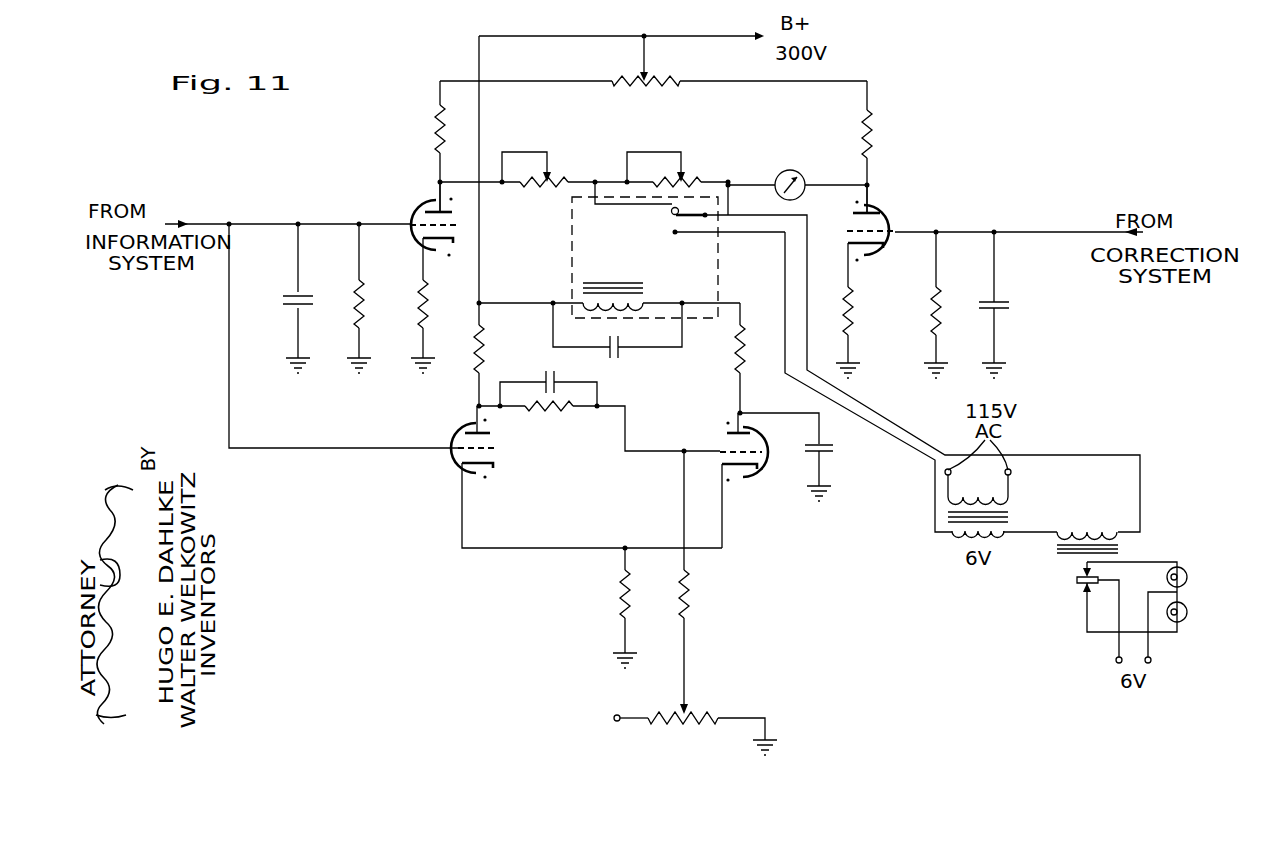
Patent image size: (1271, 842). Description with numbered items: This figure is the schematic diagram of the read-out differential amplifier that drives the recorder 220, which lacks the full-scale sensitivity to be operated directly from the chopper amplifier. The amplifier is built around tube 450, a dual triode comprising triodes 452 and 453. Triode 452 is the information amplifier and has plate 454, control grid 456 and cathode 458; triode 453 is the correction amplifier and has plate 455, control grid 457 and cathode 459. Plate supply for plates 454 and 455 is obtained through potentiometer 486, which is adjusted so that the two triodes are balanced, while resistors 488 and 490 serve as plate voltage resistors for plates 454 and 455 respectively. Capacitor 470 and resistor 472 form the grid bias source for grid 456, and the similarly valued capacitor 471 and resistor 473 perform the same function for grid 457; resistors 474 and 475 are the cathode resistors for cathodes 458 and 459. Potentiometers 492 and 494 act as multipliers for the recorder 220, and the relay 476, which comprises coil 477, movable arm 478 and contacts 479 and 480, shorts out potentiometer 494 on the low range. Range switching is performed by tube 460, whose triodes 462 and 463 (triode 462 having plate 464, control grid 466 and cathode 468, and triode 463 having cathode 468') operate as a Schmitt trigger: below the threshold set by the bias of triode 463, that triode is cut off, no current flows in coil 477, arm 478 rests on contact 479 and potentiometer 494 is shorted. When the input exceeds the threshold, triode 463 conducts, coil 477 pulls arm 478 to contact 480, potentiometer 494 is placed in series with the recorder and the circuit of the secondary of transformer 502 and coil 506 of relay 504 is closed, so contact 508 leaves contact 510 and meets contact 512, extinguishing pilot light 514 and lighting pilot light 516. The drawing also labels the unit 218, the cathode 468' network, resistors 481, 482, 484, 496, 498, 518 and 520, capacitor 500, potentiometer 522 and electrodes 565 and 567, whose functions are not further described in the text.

The relay unit 218 is at (642, 266).
The recorder 220 is at (796, 170).
The tube 450 is at (642, 266).
The triode 452 is at (437, 220).
The triode 453 is at (907, 224).
The plate 454 is at (436, 178).
The plate 455 is at (888, 205).
The control grid 456 is at (457, 223).
The control grid 457 is at (895, 228).
The cathode 458 is at (430, 262).
The cathode 459 is at (869, 258).
The tube 460 is at (564, 434).
The triode 462 is at (552, 477).
The triode 463 is at (738, 472).
The plate 464 is at (455, 428).
The control grid 466 is at (450, 452).
The cathode 468 is at (592, 505).
The cathode 468' is at (763, 506).
The capacitor 470 is at (286, 300).
The capacitor 471 is at (1000, 306).
The resistor 472 is at (356, 305).
The resistor 473 is at (938, 318).
The cathode resistor 474 is at (422, 305).
The cathode resistor 475 is at (850, 320).
The relay 476 is at (572, 280).
The relay coil 477 is at (591, 310).
The movable arm 478 is at (672, 231).
The contact 479 is at (668, 210).
The contact 480 is at (697, 232).
The capacitor 481 is at (614, 362).
The capacitor 482 is at (548, 368).
The resistor 484 is at (550, 412).
The potentiometer 486 is at (618, 75).
The resistor 488 is at (436, 120).
The resistor 490 is at (870, 135).
The potentiometer 492 is at (563, 175).
The potentiometer 494 is at (687, 175).
The resistor 496 is at (475, 360).
The resistor 498 is at (738, 345).
The capacitor 500 is at (835, 450).
The transformer 502 is at (1008, 510).
The relay 504 is at (1119, 603).
The relay coil 506 is at (1090, 530).
The contact 508 is at (1082, 585).
The contact 510 is at (1080, 565).
The contact 512 is at (1088, 605).
The pilot light 514 is at (1187, 572).
The pilot light 516 is at (1187, 622).
The resistor 518 is at (622, 600).
The resistor 520 is at (690, 590).
The potentiometer 522 is at (710, 715).
The plate 565 is at (732, 425).
The grid 567 is at (755, 445).